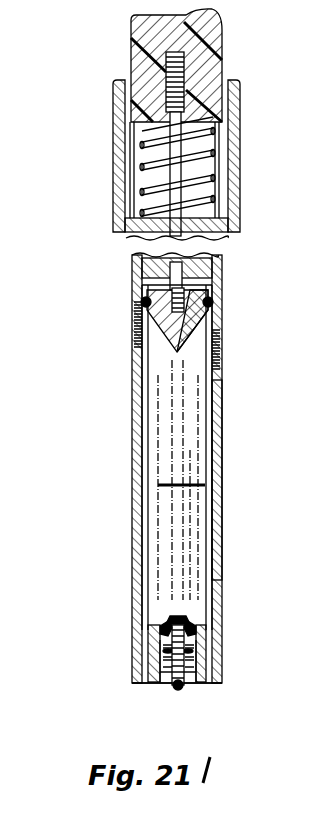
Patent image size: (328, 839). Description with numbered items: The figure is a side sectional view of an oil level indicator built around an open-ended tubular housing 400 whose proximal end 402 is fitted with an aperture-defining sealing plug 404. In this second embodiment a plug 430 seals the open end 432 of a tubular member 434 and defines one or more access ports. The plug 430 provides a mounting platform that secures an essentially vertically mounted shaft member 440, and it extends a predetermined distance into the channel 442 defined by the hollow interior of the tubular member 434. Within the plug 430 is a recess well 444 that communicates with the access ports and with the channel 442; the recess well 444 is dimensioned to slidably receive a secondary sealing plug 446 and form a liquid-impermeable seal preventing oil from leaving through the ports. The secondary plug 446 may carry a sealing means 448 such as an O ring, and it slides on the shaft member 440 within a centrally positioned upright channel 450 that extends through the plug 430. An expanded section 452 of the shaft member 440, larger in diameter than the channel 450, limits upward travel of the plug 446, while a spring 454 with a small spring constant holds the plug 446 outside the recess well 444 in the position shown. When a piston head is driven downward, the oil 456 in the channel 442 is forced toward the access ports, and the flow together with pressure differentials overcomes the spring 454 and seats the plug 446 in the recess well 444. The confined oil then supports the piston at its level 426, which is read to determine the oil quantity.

The tubular housing 400 is at (222, 463).
The proximal end 402 is at (130, 687).
The sealing plug 404 is at (188, 687).
The level of oil 426 is at (157, 484).
The plug 430 is at (157, 685).
The open end 432 is at (215, 678).
The tubular member 434 is at (220, 577).
The shaft member 440 is at (160, 652).
The channel 442 is at (173, 553).
The recess well 444 is at (200, 642).
The secondary sealing plug 446 is at (160, 600).
The sealing means 448 is at (165, 622).
The upright channel 450 is at (158, 660).
The expanded section 452 is at (190, 636).
The spring 454 is at (190, 347).
The oil 456 is at (188, 505).